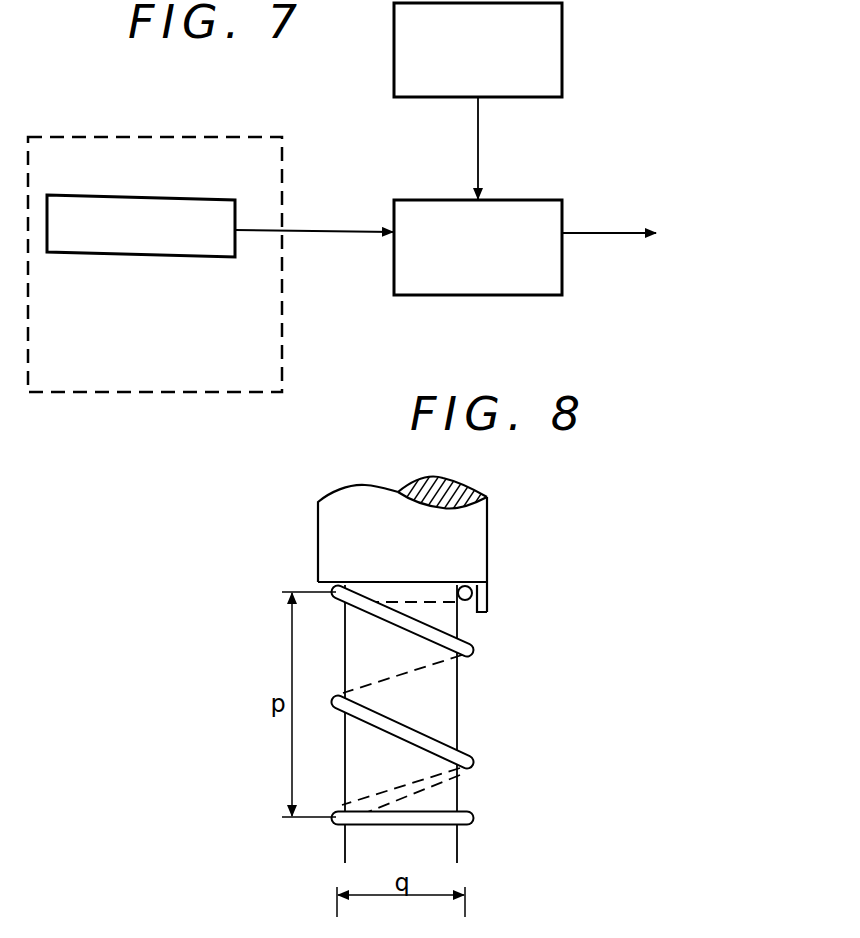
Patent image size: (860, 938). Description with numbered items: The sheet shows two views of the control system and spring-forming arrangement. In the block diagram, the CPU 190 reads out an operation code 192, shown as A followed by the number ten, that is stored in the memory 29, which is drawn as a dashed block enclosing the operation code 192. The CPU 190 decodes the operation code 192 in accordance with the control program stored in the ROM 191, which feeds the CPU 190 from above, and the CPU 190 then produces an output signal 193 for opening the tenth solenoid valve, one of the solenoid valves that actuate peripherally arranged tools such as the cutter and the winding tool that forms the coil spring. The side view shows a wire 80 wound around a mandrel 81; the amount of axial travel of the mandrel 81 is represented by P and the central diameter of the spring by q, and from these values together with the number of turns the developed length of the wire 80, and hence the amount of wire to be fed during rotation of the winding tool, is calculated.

In FIG. 7, the memory 29 is at (258, 392).
In FIG. 8, the wire 80 is at (476, 648).
In FIG. 8, the mandrel 81 is at (457, 711).
In FIG. 7, the CPU 190 is at (480, 295).
In FIG. 7, the ROM 191 is at (410, 97).
In FIG. 7, the operation code 192 is at (178, 257).
In FIG. 7, the output signal 193 is at (606, 235).